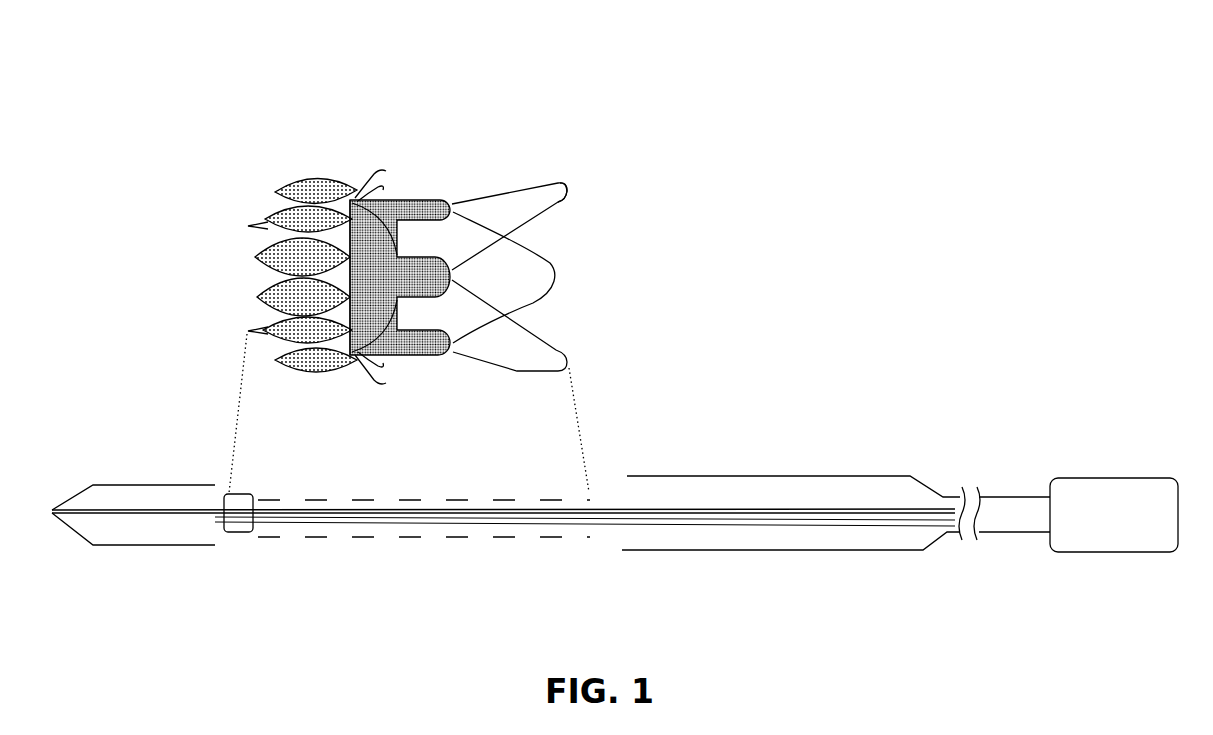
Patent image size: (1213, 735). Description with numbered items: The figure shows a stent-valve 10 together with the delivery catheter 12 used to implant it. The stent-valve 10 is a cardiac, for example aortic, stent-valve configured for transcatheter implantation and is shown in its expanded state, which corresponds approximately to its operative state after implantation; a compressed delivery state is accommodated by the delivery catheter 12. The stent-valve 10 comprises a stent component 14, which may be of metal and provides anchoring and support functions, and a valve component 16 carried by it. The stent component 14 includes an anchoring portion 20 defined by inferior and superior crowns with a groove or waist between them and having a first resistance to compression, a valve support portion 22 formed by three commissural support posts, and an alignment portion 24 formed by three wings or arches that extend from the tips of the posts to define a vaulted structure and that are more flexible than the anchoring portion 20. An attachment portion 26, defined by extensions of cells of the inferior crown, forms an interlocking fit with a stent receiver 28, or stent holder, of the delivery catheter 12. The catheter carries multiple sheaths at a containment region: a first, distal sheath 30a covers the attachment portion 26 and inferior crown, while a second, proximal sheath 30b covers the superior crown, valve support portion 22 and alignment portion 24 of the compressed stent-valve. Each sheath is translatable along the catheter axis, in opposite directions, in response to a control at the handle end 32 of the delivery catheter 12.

The stent-valve 10 is at (360, 95).
The delivery catheter 12 is at (893, 350).
The stent component 14 is at (466, 188).
The valve component 16 is at (400, 190).
The anchoring portion 20 is at (312, 170).
The valve support portion 22 is at (413, 357).
The alignment portion 24 is at (510, 370).
The attachment portion 26 is at (248, 205).
The stent receiver 28 is at (240, 522).
The first sheath 30a is at (126, 486).
The second sheath 30b is at (770, 477).
The handle end 32 is at (1090, 505).